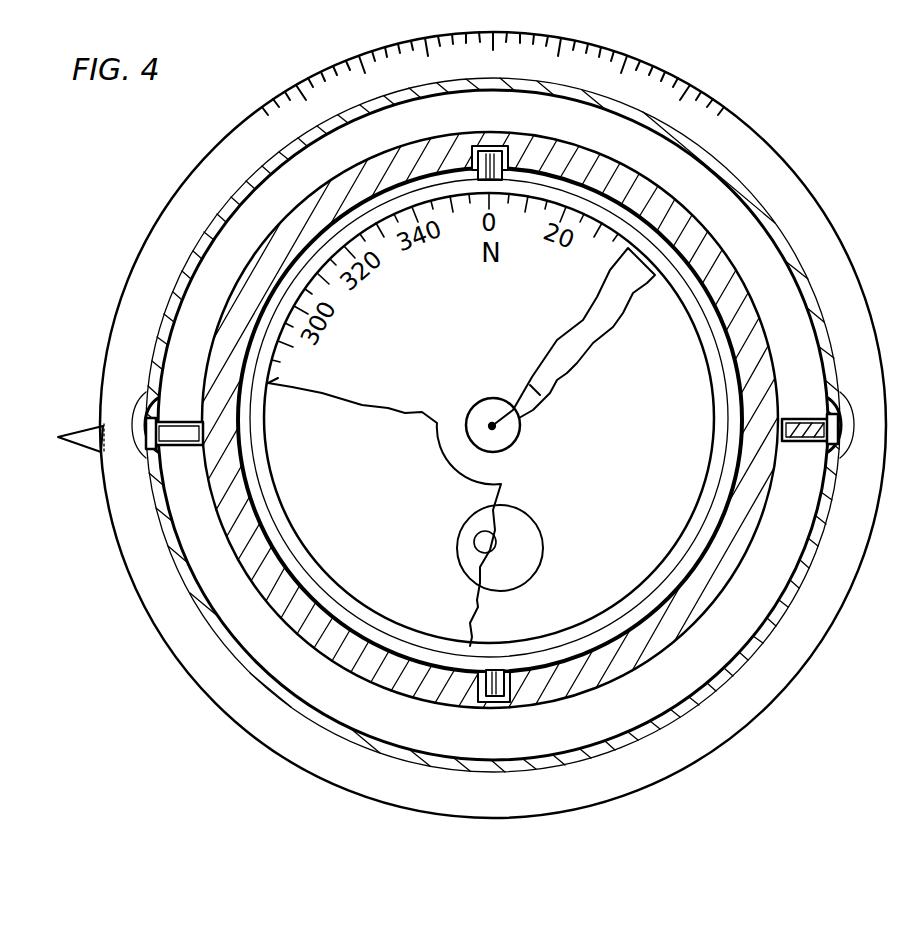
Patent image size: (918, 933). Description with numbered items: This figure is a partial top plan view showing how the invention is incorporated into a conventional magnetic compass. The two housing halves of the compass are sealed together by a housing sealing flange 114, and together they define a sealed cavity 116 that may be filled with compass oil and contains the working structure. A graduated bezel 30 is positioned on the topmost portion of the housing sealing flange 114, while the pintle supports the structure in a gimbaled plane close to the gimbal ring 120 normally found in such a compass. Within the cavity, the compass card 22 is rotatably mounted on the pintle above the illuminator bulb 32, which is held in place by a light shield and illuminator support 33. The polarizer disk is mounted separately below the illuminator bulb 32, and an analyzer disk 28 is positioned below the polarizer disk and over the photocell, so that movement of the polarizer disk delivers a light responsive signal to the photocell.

The compass card 22 is at (352, 403).
The analyzer disk 28 is at (540, 527).
The graduated bezel 30 is at (620, 53).
The illuminator bulb 32 is at (477, 543).
The light shield and illuminator support 33 is at (593, 343).
The housing sealing flange 114 is at (657, 783).
The sealed cavity 116 is at (680, 670).
The gimbal ring 120 is at (397, 700).